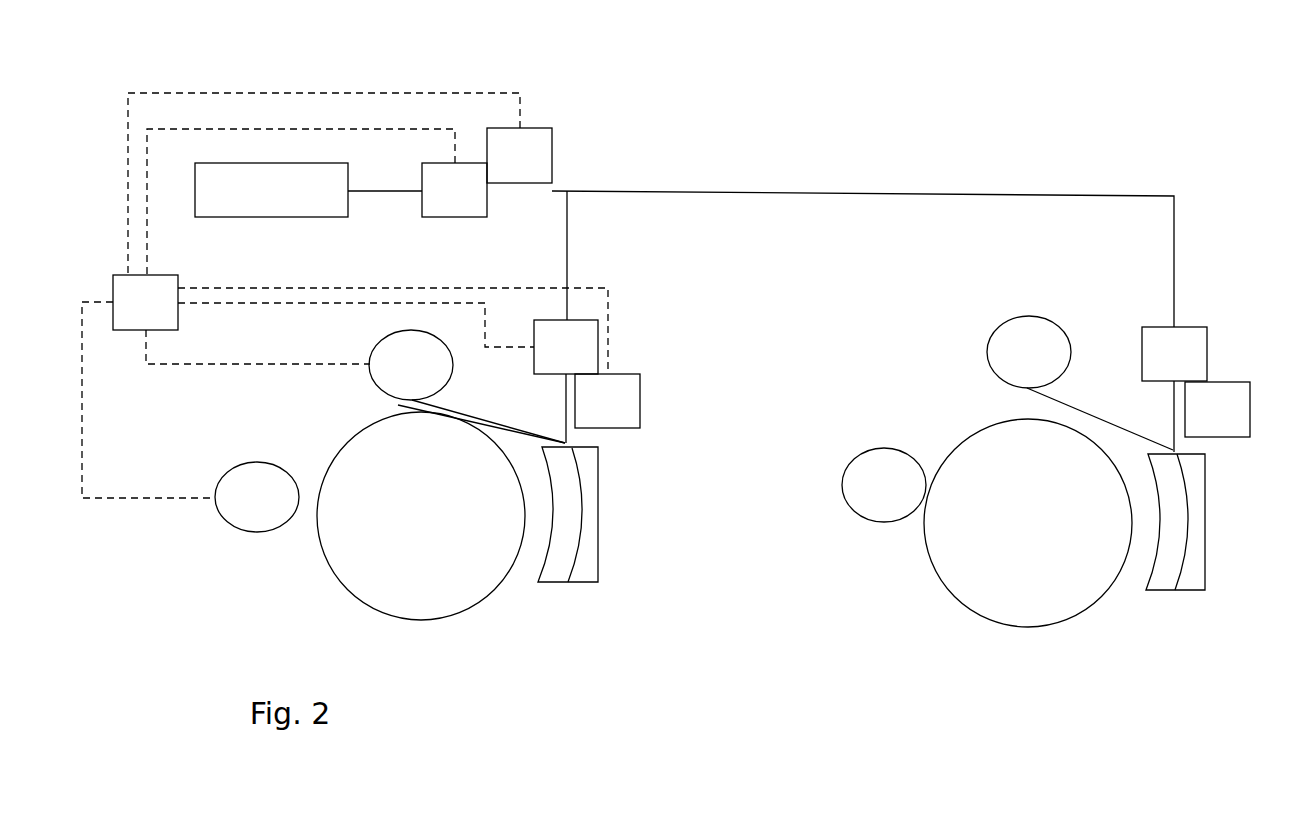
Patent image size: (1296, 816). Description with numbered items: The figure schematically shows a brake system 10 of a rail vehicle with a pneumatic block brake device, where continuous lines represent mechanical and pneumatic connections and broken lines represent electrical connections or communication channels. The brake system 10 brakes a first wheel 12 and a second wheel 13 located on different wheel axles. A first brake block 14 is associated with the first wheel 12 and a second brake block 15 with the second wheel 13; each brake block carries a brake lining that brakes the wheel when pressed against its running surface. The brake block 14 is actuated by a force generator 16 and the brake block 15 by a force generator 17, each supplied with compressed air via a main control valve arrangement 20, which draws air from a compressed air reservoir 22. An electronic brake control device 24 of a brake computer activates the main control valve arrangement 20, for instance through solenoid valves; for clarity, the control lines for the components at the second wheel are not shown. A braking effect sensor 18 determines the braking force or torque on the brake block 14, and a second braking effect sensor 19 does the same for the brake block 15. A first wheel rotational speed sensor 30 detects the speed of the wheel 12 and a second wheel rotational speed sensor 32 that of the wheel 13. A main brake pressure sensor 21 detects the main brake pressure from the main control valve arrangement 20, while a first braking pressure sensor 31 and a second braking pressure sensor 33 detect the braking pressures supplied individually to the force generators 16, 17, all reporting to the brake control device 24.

The brake system 10 is at (836, 156).
The first wheel 12 is at (421, 516).
The second wheel 13 is at (1028, 523).
The first brake block 14 is at (567, 588).
The second brake block 15 is at (1173, 595).
The force generator 16 is at (566, 347).
The force generator 17 is at (1174, 354).
The braking effect sensor 18 is at (411, 365).
The second braking effect sensor 19 is at (1029, 352).
The main control valve arrangement 20 is at (454, 190).
The main brake pressure sensor 21 is at (519, 155).
The compressed air reservoir 22 is at (271, 190).
The electronic brake control device 24 is at (145, 302).
The first wheel rotational speed sensor 30 is at (257, 497).
The first braking pressure sensor 31 is at (607, 401).
The second wheel rotational speed sensor 32 is at (884, 485).
The second braking pressure sensor 33 is at (1217, 409).